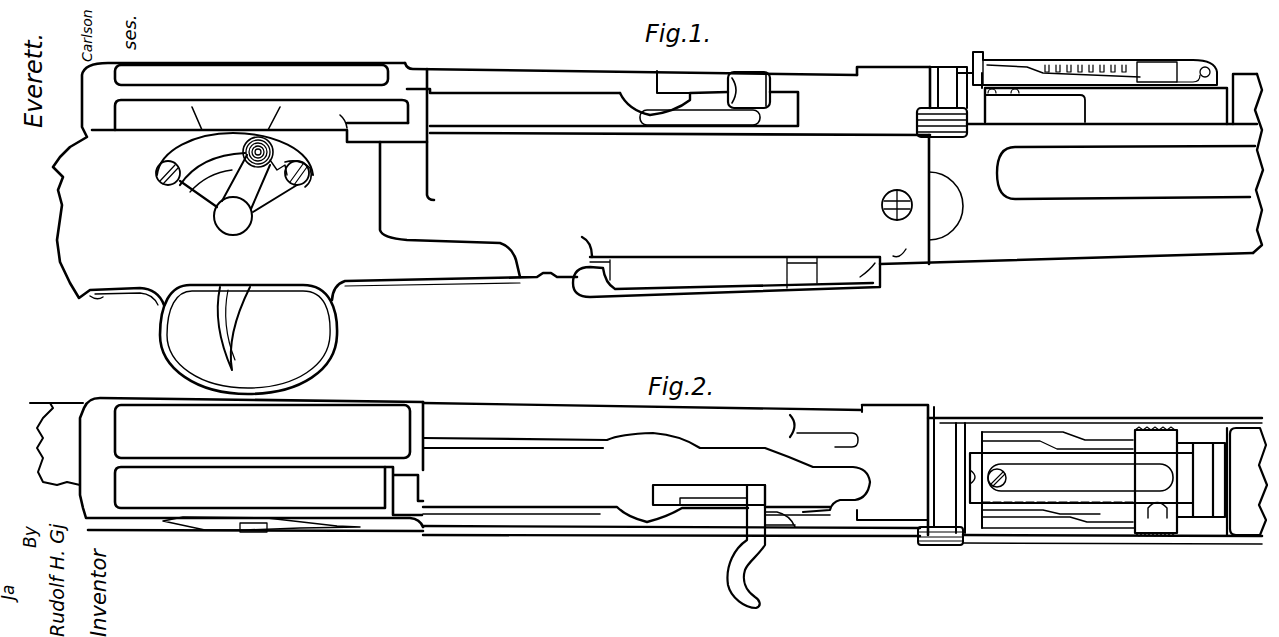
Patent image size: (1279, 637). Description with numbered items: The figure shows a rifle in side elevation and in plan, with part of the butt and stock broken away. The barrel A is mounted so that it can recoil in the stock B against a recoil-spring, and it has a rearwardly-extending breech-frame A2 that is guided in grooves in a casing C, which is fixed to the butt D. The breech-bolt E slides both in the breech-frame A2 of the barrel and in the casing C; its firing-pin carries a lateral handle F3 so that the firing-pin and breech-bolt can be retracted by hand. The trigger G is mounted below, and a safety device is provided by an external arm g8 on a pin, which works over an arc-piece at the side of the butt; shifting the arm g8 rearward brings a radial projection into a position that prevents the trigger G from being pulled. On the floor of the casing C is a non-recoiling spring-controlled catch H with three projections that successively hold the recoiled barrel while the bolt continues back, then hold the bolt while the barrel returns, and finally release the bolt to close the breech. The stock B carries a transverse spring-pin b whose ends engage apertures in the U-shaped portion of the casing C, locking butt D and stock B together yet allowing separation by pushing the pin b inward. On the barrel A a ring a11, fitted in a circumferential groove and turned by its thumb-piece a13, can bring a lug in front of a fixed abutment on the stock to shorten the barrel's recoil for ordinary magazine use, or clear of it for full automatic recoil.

In FIG. 1, the barrel A is at (906, 87).
In FIG. 2, the barrel A is at (892, 470).
In FIG. 1, the breech-frame A2 is at (841, 165).
In FIG. 2, the breech-frame A2 is at (587, 539).
In FIG. 1, the stock B is at (1115, 152).
In FIG. 2, the stock B is at (1115, 485).
In FIG. 1, the casing C is at (643, 134).
In FIG. 2, the casing C is at (466, 480).
In FIG. 2, the butt D is at (56, 444).
In FIG. 1, the breech-bolt E is at (674, 89).
In FIG. 2, the breech-bolt E is at (646, 463).
In FIG. 1, the lateral handle F3 is at (749, 90).
In FIG. 2, the lateral handle F3 is at (724, 546).
In FIG. 1, the trigger G is at (237, 328).
In FIG. 1, the external arm g8 is at (250, 187).
In FIG. 2, the external arm g8 is at (244, 532).
In FIG. 1, the spring-controlled catch H is at (727, 273).
In FIG. 1, the ring a11 is at (943, 87).
In FIG. 2, the ring a11 is at (944, 443).
In FIG. 1, the thumb-piece a13 is at (953, 134).
In FIG. 2, the thumb-piece a13 is at (944, 541).
In FIG. 1, the transverse spring-pin b is at (882, 207).